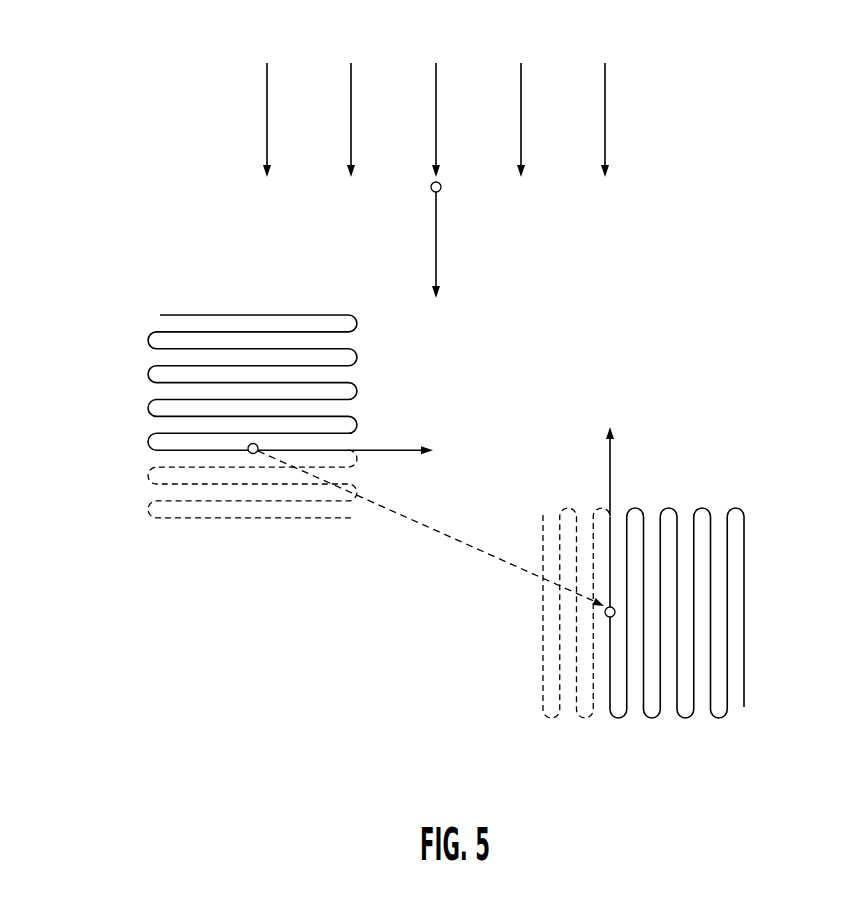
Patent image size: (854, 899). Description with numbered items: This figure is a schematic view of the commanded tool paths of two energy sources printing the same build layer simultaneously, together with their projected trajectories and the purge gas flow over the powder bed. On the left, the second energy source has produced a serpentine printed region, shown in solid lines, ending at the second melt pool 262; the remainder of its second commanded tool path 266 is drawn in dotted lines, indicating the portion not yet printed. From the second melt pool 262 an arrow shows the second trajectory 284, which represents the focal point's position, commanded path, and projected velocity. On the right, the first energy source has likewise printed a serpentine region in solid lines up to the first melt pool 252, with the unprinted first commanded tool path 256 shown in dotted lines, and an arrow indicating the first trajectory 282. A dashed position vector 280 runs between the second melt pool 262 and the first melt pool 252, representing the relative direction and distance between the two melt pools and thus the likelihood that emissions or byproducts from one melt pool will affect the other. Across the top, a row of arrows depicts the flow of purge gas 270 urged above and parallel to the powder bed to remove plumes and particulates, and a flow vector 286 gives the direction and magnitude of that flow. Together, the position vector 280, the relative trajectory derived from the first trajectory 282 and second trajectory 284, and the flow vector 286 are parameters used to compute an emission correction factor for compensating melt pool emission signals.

The purge gas 270 is at (605, 140).
The flow vector 286 is at (436, 242).
The second melt pool 262 is at (249, 451).
The second commanded tool path 266 is at (183, 518).
The second trajectory 284 is at (397, 449).
The position vector 280 is at (433, 530).
The first melt pool 252 is at (615, 610).
The first commanded tool path 256 is at (584, 719).
The first trajectory 282 is at (611, 477).